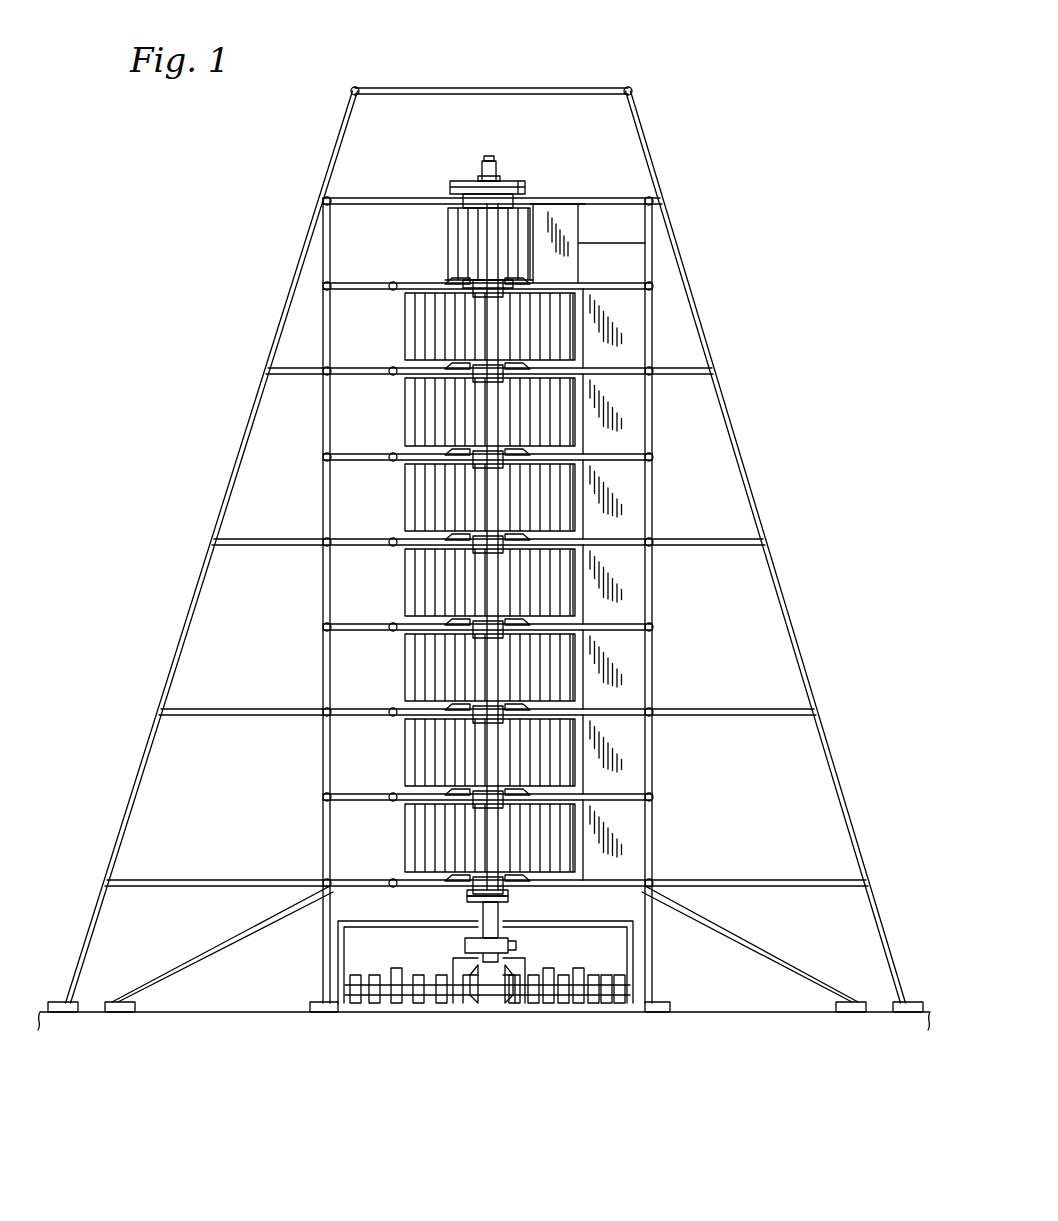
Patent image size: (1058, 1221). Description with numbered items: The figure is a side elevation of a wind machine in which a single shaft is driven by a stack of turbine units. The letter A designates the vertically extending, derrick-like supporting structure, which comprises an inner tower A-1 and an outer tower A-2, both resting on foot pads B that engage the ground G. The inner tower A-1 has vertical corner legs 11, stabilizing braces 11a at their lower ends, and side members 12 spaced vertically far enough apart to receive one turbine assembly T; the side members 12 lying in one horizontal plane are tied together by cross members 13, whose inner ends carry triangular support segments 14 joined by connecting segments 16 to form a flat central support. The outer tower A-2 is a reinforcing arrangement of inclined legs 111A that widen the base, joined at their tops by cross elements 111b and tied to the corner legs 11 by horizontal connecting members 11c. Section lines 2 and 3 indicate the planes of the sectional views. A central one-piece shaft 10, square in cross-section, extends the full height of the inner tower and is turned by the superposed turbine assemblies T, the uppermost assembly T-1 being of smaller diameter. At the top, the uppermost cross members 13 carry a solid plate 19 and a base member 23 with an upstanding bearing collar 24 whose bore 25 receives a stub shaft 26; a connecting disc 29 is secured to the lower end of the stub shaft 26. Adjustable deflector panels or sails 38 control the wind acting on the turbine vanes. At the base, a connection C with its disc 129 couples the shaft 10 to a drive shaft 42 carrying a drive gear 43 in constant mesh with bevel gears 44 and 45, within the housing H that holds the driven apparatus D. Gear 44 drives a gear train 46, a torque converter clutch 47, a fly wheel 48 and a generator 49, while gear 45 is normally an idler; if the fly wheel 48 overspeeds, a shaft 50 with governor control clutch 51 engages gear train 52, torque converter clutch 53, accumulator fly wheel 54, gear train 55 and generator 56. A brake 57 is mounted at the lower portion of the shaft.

The section line 2- 2 is at (262, 157).
The section line 3- 3 is at (300, 288).
The supporting structure A is at (647, 95).
The inner tower A-1 is at (650, 509).
The outer tower A-2 is at (768, 547).
The cross elements 111b is at (388, 89).
The inclined legs 111A is at (201, 578).
The vertical corner legs 11 is at (321, 655).
The stabilizing braces 11a is at (235, 936).
The horizontal cross or connecting members 11c is at (296, 366).
The side members 12 is at (660, 201).
The cross members 13 is at (392, 198).
The deflector panels or sails 38 is at (563, 235).
The central one-piece shaft 10 is at (487, 695).
The turbine assemblies T is at (404, 330).
The uppermost turbine assembly T-1 is at (448, 239).
The connecting segments 16 is at (480, 282).
The stub shaft 26 is at (485, 158).
The bore 25 is at (497, 165).
The bearing collar 24 is at (481, 180).
The base member 23 is at (504, 183).
The solid plate member 19 is at (527, 190).
The connecting disc 29 is at (487, 200).
The support segment 14 is at (535, 205).
The disc of connection 129 is at (467, 894).
The connection C is at (508, 896).
The drive shaft 42 is at (498, 920).
The brake 57 is at (465, 946).
The housing H is at (372, 921).
The apparatus or machinery D is at (581, 969).
The drive gear 43 is at (455, 972).
The shaft 50 is at (523, 972).
The bevel gear 44 is at (478, 1003).
The bevel gear 45 is at (505, 1003).
The gear train 46 is at (430, 1003).
The torque converter clutch 47 is at (396, 1003).
The fly wheel 48 is at (372, 1003).
The generator 49 is at (352, 1003).
The governor control torque converter clutch 51 is at (514, 1003).
The gear train 52 is at (533, 1003).
The torque converter clutch 53 is at (548, 1003).
The accumulator fly wheel 54 is at (563, 1003).
The gear train 55 is at (578, 1003).
The generator 56 is at (593, 1003).
The foot pads B is at (98, 1002).
The ground G is at (226, 1010).